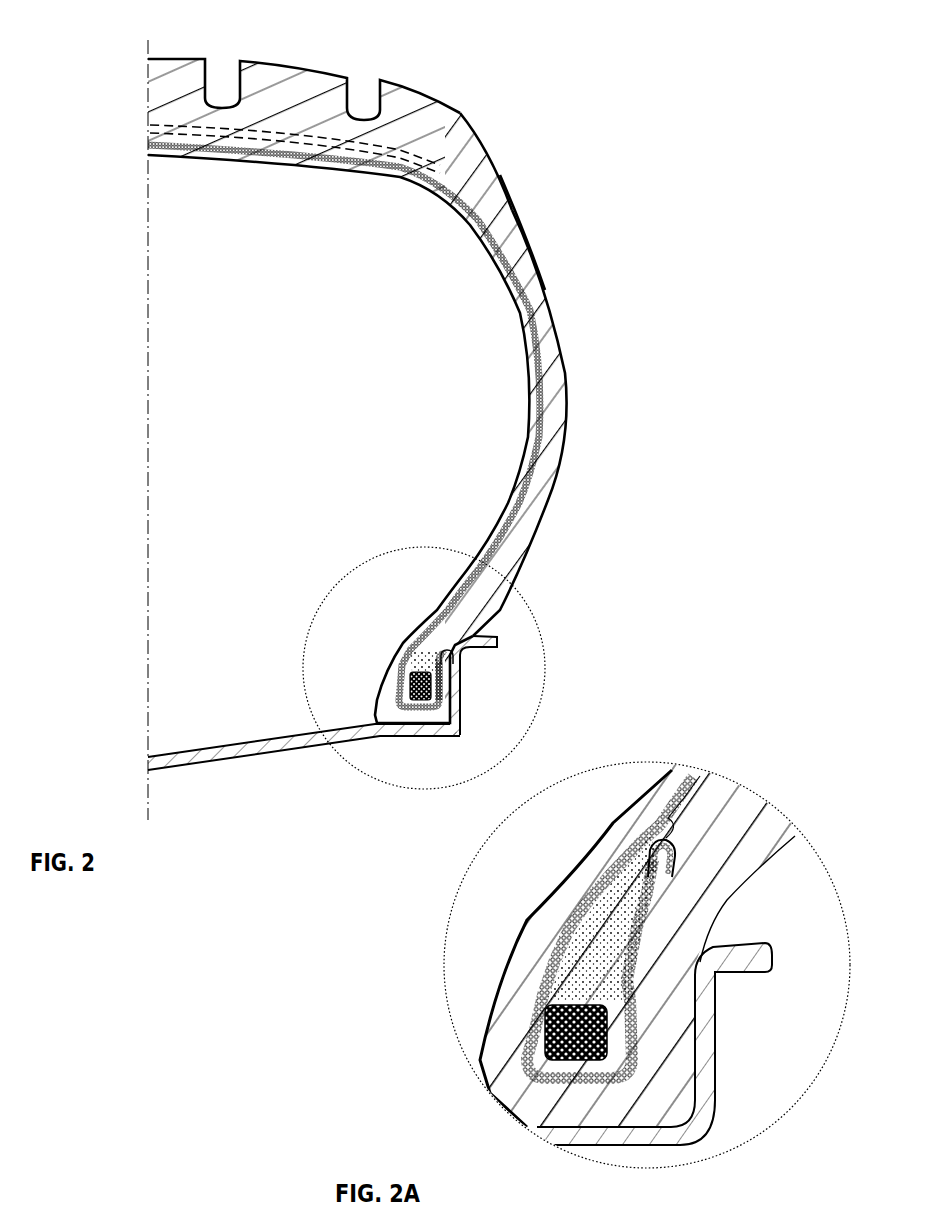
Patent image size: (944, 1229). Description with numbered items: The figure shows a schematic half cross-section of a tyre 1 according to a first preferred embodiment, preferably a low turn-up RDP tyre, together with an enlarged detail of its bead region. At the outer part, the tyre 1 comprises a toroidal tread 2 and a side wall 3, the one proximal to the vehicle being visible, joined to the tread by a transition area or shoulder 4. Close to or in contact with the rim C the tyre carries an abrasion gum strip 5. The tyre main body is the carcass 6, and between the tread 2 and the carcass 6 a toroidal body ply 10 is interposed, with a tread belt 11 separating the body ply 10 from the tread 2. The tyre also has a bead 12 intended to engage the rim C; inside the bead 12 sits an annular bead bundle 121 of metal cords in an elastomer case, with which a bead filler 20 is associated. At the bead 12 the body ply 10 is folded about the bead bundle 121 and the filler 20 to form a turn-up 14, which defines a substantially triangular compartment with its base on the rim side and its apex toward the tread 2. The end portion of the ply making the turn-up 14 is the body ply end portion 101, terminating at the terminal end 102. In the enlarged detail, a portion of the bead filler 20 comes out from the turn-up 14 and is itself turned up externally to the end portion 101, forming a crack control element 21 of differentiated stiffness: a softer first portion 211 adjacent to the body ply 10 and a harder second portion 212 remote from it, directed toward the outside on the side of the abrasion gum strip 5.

In FIG. 2, the tyre 1 is at (748, 88).
In FIG. 2, the toroidal tread 2 is at (403, 81).
In FIG. 2, the proximal side wall 3 is at (566, 350).
In FIG. 2, the transition area (shoulder) 4 is at (513, 210).
In FIG. 2, the abrasion gum strip 5 is at (490, 627).
In FIG. 2, the carcass 6 is at (466, 178).
In FIG. 2, the body ply 10 is at (493, 222).
In FIG. 2, the tread belt 11 is at (289, 132).
In FIG. 2, the bead 12 is at (352, 685).
In FIG. 2, the turn-up 14 is at (443, 658).
In FIG. 2, the bead filler 20 is at (423, 645).
In FIG. 2, the bead bundle 121 is at (443, 695).
In FIG. 2, the rim C is at (200, 764).
In FIG. 2A, the body ply end portion 101 is at (647, 912).
In FIG. 2A, the body ply terminal end 102 is at (672, 842).
In FIG. 2A, the crack control element 21 is at (678, 863).
In FIG. 2A, the first portion 211 is at (557, 942).
In FIG. 2A, the second portion 212 is at (578, 980).